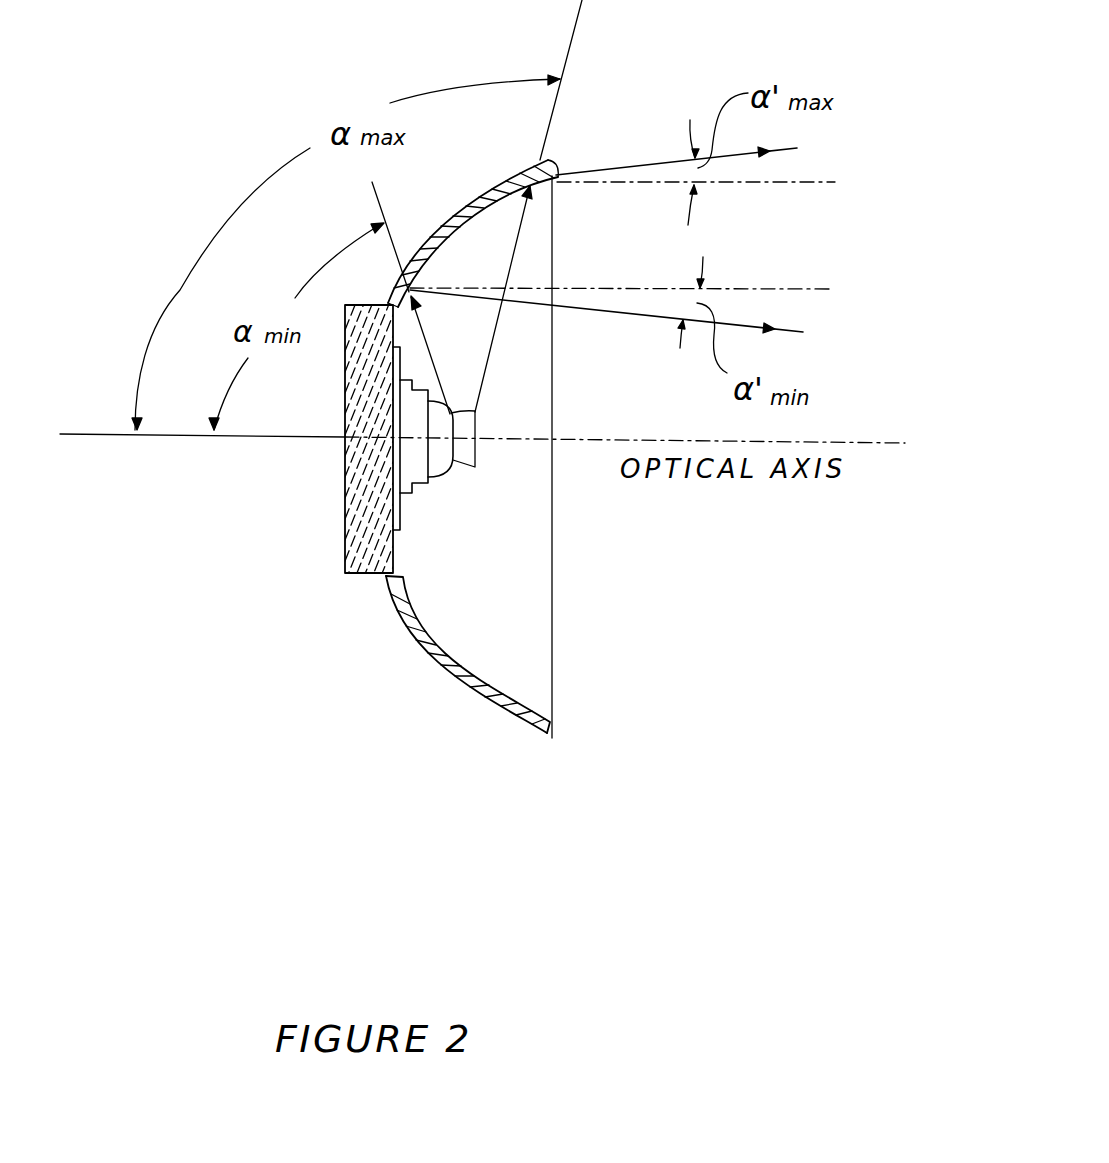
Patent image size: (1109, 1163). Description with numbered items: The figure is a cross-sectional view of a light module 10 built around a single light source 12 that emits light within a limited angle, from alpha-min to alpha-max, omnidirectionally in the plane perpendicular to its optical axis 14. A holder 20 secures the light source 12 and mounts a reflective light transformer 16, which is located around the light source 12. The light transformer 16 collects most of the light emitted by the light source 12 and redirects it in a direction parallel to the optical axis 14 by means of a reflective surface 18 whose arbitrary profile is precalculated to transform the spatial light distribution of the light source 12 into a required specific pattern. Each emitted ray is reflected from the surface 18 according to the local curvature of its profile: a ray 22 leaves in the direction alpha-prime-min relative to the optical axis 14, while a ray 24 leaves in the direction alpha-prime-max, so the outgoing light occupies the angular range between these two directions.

The light module 10 is at (476, 498).
The light source 12 is at (583, 549).
The optical axis 14 is at (507, 444).
The reflective light transformer 16 is at (394, 446).
The reflective surface 18 is at (468, 645).
The holder 20 is at (292, 448).
The ray 22 is at (635, 322).
The ray 24 is at (705, 157).